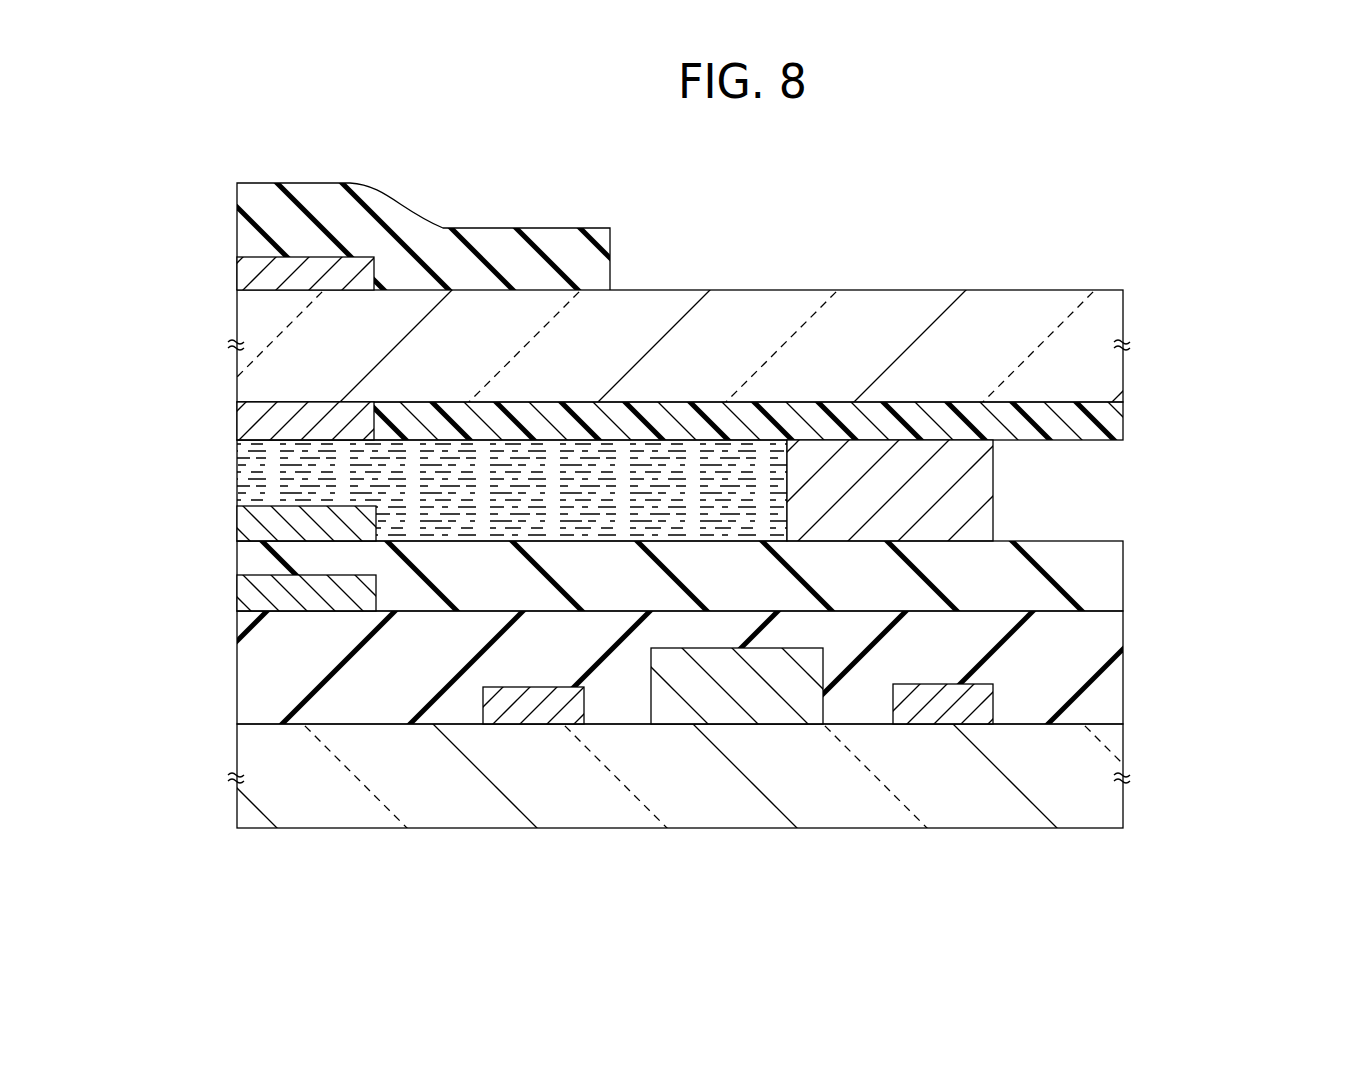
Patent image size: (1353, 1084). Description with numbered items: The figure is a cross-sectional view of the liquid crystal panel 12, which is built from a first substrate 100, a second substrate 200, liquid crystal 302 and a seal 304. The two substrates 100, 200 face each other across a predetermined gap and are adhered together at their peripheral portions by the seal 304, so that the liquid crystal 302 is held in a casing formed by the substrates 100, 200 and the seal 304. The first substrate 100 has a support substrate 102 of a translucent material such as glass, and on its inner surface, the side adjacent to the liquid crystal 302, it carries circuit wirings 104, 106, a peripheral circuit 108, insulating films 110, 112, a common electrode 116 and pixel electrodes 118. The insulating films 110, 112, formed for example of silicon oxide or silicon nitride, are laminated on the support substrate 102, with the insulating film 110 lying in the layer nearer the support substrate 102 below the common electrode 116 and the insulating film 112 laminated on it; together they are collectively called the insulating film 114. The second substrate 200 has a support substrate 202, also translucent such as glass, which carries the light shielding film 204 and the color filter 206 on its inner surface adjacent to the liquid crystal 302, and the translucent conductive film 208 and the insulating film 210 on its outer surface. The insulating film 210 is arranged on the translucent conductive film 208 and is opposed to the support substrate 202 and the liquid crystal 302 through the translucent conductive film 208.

The liquid crystal panel 12 is at (963, 200).
The first substrate 100 is at (1125, 840).
The support substrate 102 is at (1112, 805).
The circuit wiring 104 is at (927, 712).
The circuit wiring 106 is at (538, 716).
The peripheral circuit 108 is at (720, 707).
The insulating film 110 is at (1103, 650).
The insulating film 112 is at (1108, 573).
The insulating film 114 is at (1253, 572).
The common electrode 116 is at (245, 600).
The pixel electrode 118 is at (245, 522).
The second substrate 200 is at (1120, 268).
The support substrate 202 is at (1112, 313).
The light shielding film 204 is at (1112, 401).
The color filter 206 is at (245, 418).
The translucent conductive film 208 is at (247, 282).
The insulating film 210 is at (440, 240).
The liquid crystal 302 is at (245, 455).
The seal 304 is at (975, 478).